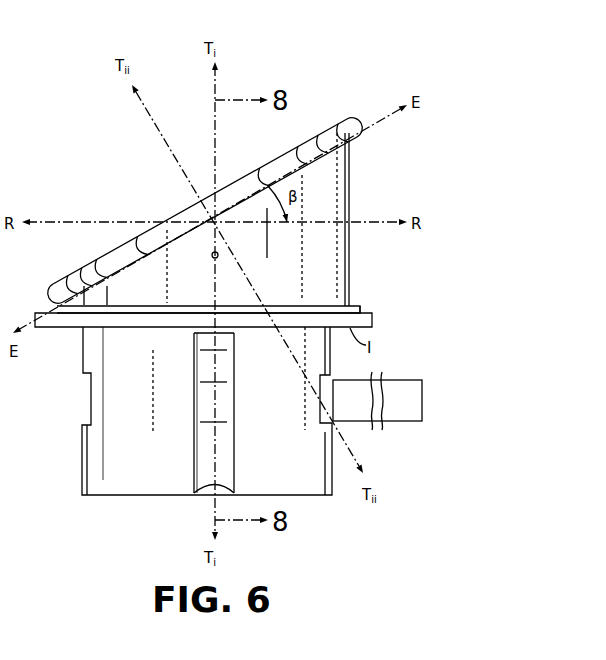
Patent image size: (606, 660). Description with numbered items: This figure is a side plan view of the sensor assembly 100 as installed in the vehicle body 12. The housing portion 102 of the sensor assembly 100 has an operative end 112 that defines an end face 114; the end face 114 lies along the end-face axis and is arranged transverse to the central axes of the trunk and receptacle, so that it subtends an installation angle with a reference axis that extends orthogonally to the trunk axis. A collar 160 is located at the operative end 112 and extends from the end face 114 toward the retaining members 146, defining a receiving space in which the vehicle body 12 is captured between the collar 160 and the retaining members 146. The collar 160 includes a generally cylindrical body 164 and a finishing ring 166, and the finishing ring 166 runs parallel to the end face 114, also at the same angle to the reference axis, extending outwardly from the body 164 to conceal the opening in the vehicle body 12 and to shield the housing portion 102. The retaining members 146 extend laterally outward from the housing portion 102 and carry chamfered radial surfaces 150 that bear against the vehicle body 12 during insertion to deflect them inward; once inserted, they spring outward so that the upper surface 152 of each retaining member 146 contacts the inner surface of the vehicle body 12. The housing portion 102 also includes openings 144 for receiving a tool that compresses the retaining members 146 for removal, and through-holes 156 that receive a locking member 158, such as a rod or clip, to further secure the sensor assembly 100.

The sensor assembly 100 is at (333, 95).
The housing portion 102 is at (70, 363).
The operative end 112 is at (367, 162).
The end face 114 is at (195, 228).
The vehicle body 12 is at (362, 301).
The openings 144 is at (211, 257).
The retaining members 146 is at (245, 450).
The chamfered radial surfaces 150 is at (193, 393).
The upper surface 152 is at (203, 333).
The through-holes 156 is at (85, 403).
The locking member 158 is at (402, 373).
The collar 160 is at (357, 212).
The body 164 is at (283, 273).
The finishing ring 166 is at (313, 148).